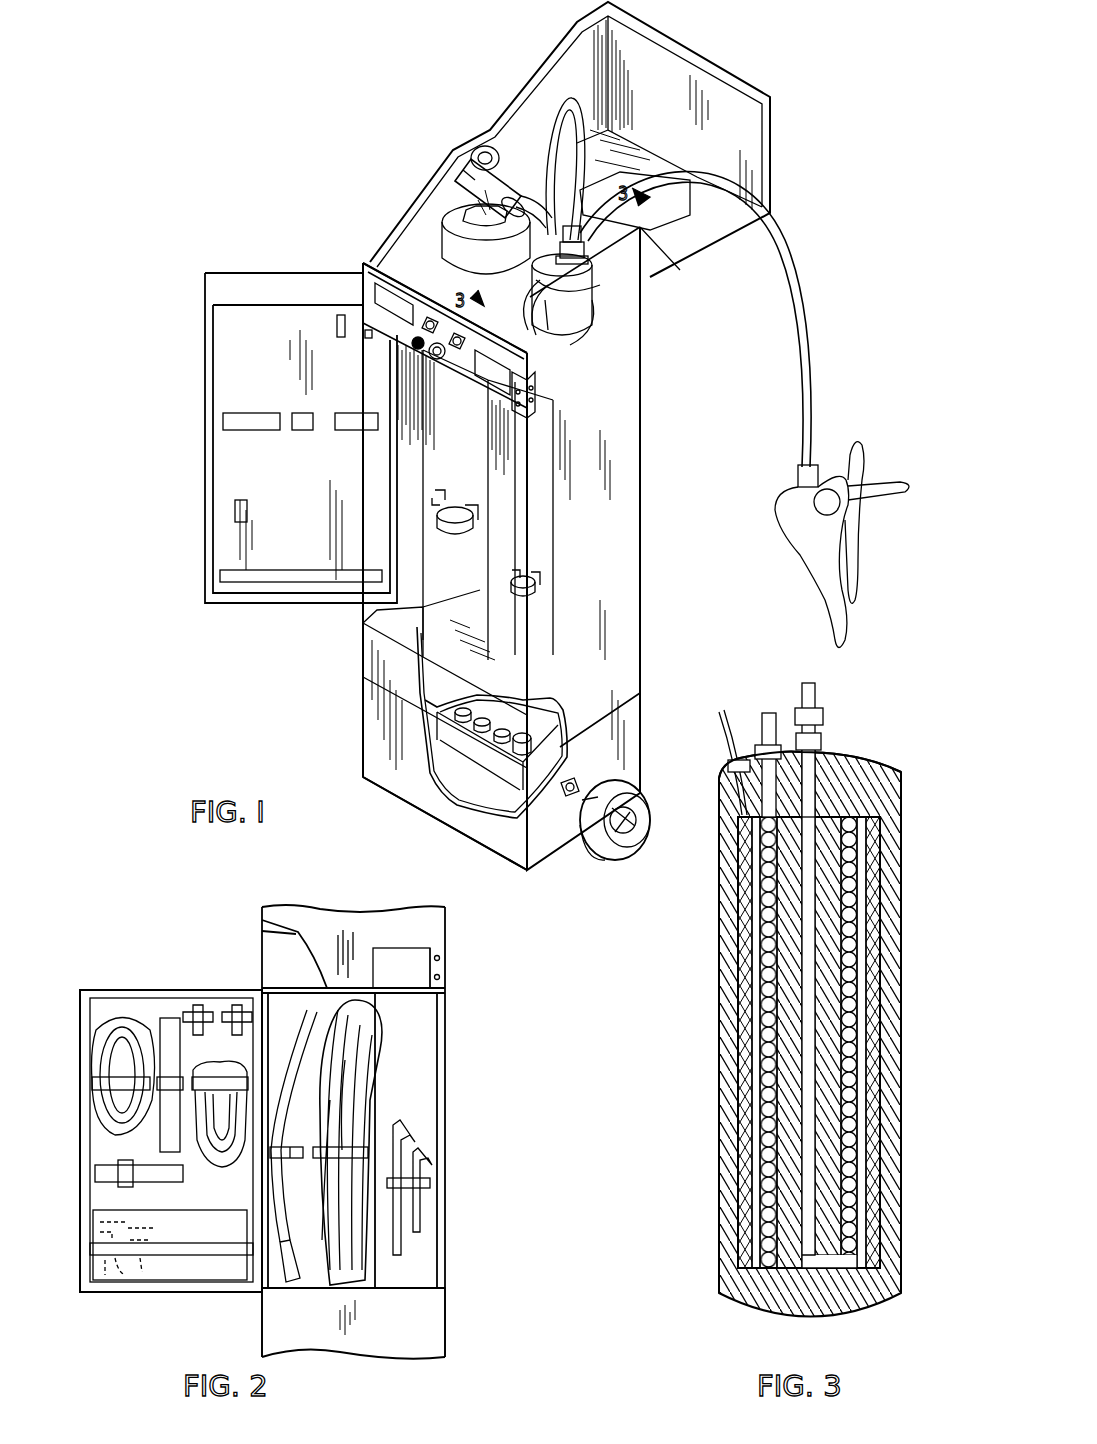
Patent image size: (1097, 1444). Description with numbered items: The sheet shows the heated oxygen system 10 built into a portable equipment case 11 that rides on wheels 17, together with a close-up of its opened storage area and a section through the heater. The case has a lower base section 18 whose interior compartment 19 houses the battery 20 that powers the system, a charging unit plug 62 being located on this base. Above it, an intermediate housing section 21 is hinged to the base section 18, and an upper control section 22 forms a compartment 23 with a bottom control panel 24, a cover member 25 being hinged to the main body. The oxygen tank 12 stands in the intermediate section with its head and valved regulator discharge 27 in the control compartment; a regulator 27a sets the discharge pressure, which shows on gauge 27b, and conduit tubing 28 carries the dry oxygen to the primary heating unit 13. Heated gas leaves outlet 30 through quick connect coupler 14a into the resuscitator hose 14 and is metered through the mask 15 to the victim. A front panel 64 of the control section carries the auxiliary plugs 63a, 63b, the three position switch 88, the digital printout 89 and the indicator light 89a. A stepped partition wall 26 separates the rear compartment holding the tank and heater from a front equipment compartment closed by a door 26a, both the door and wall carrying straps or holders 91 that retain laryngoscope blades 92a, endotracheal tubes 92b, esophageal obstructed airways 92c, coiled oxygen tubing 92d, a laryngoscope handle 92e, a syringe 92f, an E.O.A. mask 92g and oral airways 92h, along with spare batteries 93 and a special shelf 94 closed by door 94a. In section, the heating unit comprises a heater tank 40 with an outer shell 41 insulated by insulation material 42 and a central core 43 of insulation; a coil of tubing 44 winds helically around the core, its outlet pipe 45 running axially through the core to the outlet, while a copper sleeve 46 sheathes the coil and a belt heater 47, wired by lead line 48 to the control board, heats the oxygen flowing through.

In FIG. 1, the oxygen system 10 is at (590, 163).
In FIG. 1, the equipment case 11 is at (296, 223).
In FIG. 2, the equipment case 11 is at (452, 1043).
In FIG. 1, the oxygen tank 12 is at (430, 234).
In FIG. 1, the primary heating unit 13 is at (619, 297).
In FIG. 3, the primary heating unit 13 is at (889, 756).
In FIG. 1, the resuscitator hose 14 is at (799, 296).
In FIG. 3, the resuscitator hose 14 is at (851, 743).
In FIG. 1, the quick connect coupler 14a is at (592, 250).
In FIG. 3, the quick connect coupler 14a is at (823, 716).
In FIG. 1, the mask 15 is at (822, 566).
In FIG. 1, the wheels 17 is at (634, 850).
In FIG. 1, the lower base section 18 is at (433, 746).
In FIG. 2, the lower base section 18 is at (446, 1313).
In FIG. 1, the interior compartment 19 is at (425, 776).
In FIG. 1, the battery 20 is at (472, 795).
In FIG. 1, the intermediate housing section 21 is at (615, 468).
In FIG. 2, the intermediate housing section 21 is at (420, 1086).
In FIG. 1, the upper control section 22 is at (398, 262).
In FIG. 2, the upper control section 22 is at (446, 940).
In FIG. 1, the compartment 23 is at (460, 218).
In FIG. 2, the compartment 23 is at (262, 920).
In FIG. 1, the control panel 24 is at (438, 268).
In FIG. 2, the control panel 24 is at (262, 931).
In FIG. 1, the cover member 25 is at (772, 158).
In FIG. 1, the partition wall 26 is at (465, 610).
In FIG. 2, the partition wall 26 is at (425, 1258).
In FIG. 1, the door 26a is at (205, 360).
In FIG. 2, the door 26a is at (80, 1083).
In FIG. 1, the valved regulator discharge 27 is at (453, 166).
In FIG. 1, the regulator 27a is at (460, 170).
In FIG. 1, the gauge 27b is at (472, 150).
In FIG. 1, the conduit tubing 28 is at (560, 106).
In FIG. 3, the conduit tubing 28 is at (765, 730).
In FIG. 1, the outlet 30 is at (590, 262).
In FIG. 3, the outlet 30 is at (821, 742).
In FIG. 3, the heater tank 40 is at (805, 1034).
In FIG. 3, the outer shell 41 is at (901, 934).
In FIG. 3, the insulation material 42 is at (890, 1069).
In FIG. 3, the central core 43 is at (790, 1062).
In FIG. 3, the coil of tubing 44 is at (768, 946).
In FIG. 3, the outlet pipe 45 is at (810, 988).
In FIG. 3, the copper sleeve 46 is at (755, 1028).
In FIG. 1, the belt heater 47 is at (552, 343).
In FIG. 3, the belt heater 47 is at (745, 912).
In FIG. 3, the lead line 48 is at (727, 737).
In FIG. 1, the charging unit plug 62 is at (570, 797).
In FIG. 1, the auxiliary plug 63a is at (426, 330).
In FIG. 1, the auxiliary plug 63b is at (458, 350).
In FIG. 1, the front panel 64 is at (510, 374).
In FIG. 1, the three position switch 88 is at (413, 348).
In FIG. 1, the digital printout 89 is at (385, 303).
In FIG. 1, the indicator light 89a is at (436, 360).
In FIG. 1, the straps or holders 91 is at (240, 520).
In FIG. 2, the straps or holders 91 is at (110, 1082).
In FIG. 2, the laryngoscope blades 92a is at (418, 1215).
In FIG. 2, the endotracheal tubes 92b is at (340, 1120).
In FIG. 2, the esophageal obstructed airways 92c is at (287, 1223).
In FIG. 2, the coiled oxygen tubing 92d is at (205, 1152).
In FIG. 2, the laryngoscope handle 92e is at (176, 1017).
In FIG. 2, the syringe 92f is at (95, 1175).
In FIG. 2, the E.O.A. mask 92g is at (110, 1018).
In FIG. 2, the oral airways 92h is at (133, 1282).
In FIG. 2, the spare batteries 93 is at (234, 1005).
In FIG. 1, the special shelf 94 is at (535, 390).
In FIG. 2, the special shelf 94 is at (437, 985).
In FIG. 2, the door 94a is at (420, 962).